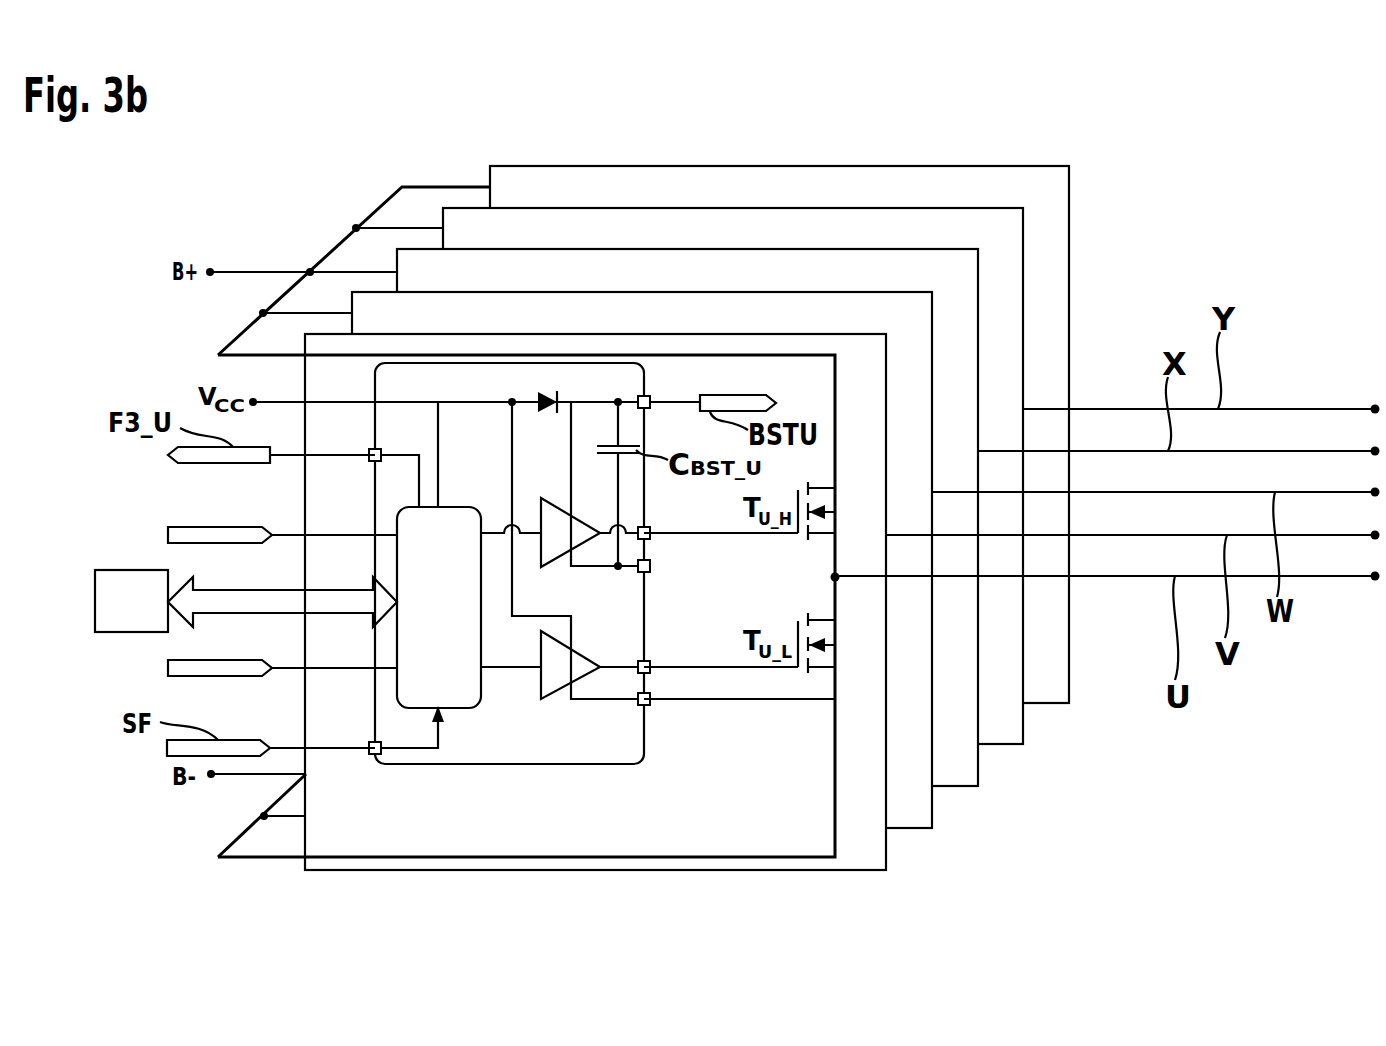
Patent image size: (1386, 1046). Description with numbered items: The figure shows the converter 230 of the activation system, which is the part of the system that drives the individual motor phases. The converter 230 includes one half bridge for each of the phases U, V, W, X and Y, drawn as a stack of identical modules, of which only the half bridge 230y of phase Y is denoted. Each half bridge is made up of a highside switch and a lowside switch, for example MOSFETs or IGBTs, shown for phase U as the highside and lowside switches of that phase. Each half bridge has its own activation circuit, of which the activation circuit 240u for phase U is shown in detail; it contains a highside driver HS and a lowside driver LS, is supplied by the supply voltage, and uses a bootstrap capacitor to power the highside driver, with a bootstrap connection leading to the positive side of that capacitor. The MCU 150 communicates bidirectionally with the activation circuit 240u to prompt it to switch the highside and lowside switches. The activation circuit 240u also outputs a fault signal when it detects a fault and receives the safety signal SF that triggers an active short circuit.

The MCU 150 is at (132, 570).
The converter 230 is at (694, 508).
The half bridge 230y is at (780, 166).
The activation circuit 240u is at (510, 764).